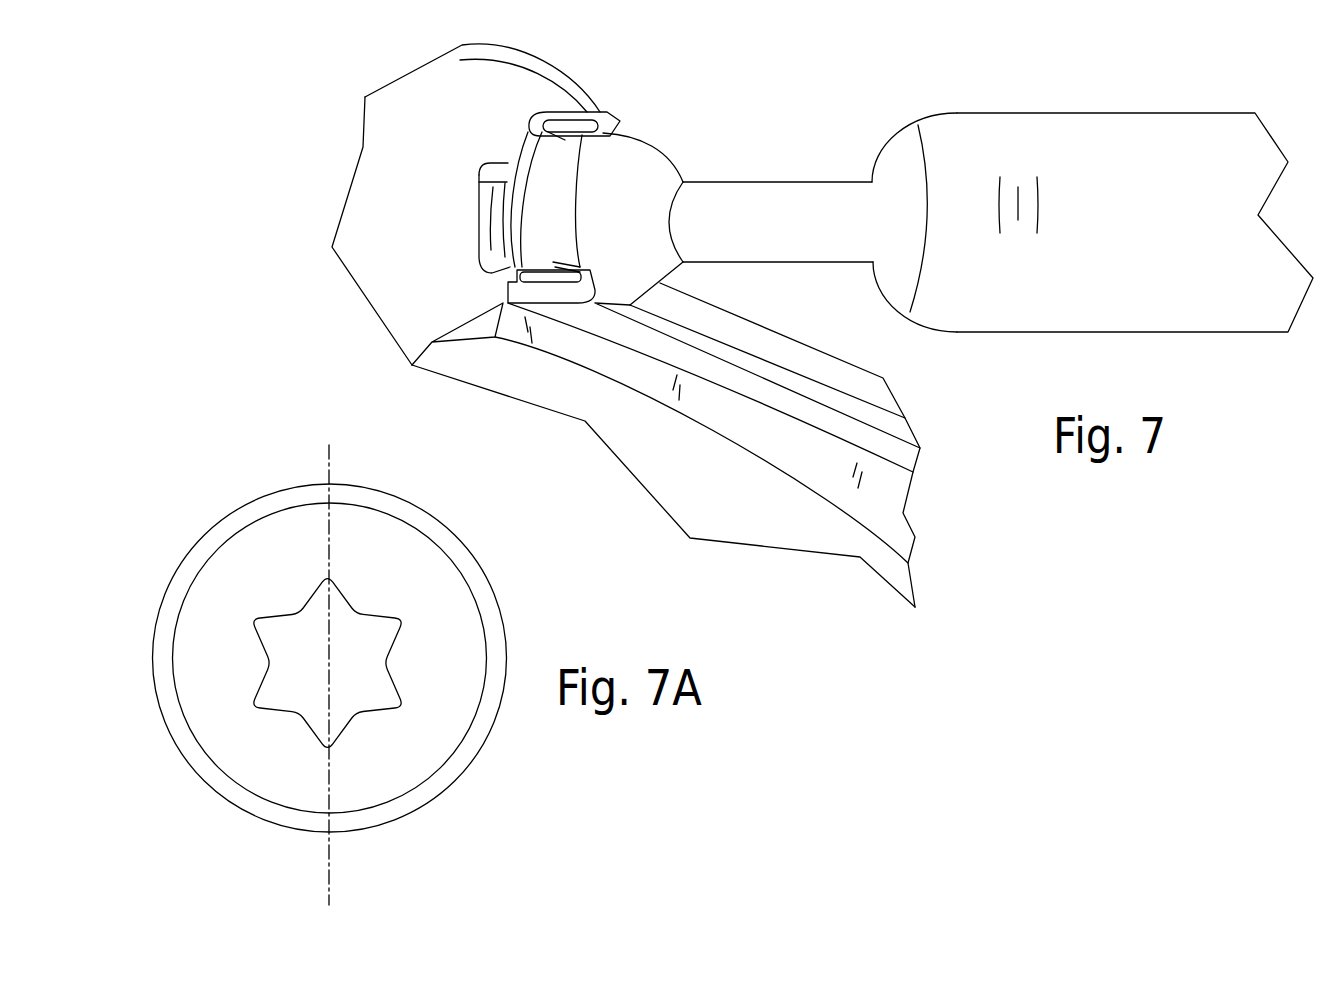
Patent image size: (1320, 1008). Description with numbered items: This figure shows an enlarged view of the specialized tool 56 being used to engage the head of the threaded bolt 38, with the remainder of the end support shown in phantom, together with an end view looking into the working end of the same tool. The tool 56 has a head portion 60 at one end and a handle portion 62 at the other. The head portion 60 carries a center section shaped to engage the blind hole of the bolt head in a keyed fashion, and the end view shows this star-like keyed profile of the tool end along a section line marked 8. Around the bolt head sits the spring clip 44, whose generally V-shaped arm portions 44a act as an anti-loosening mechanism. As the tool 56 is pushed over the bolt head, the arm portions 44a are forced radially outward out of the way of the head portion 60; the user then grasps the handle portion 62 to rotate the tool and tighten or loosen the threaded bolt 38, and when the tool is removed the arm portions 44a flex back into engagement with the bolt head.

In FIG. 7A, the section line 8- 8 is at (267, 448).
In FIG. 7, the threaded bolt 38 is at (495, 200).
In FIG. 7, the spring clip 44 is at (522, 149).
In FIG. 7, the V-shaped arm portions 44a is at (616, 110).
In FIG. 7, the specialized tool 56 is at (955, 92).
In FIG. 7A, the specialized tool 56 is at (202, 508).
In FIG. 7, the head portion 60 is at (635, 177).
In FIG. 7, the handle portion 62 is at (1187, 142).